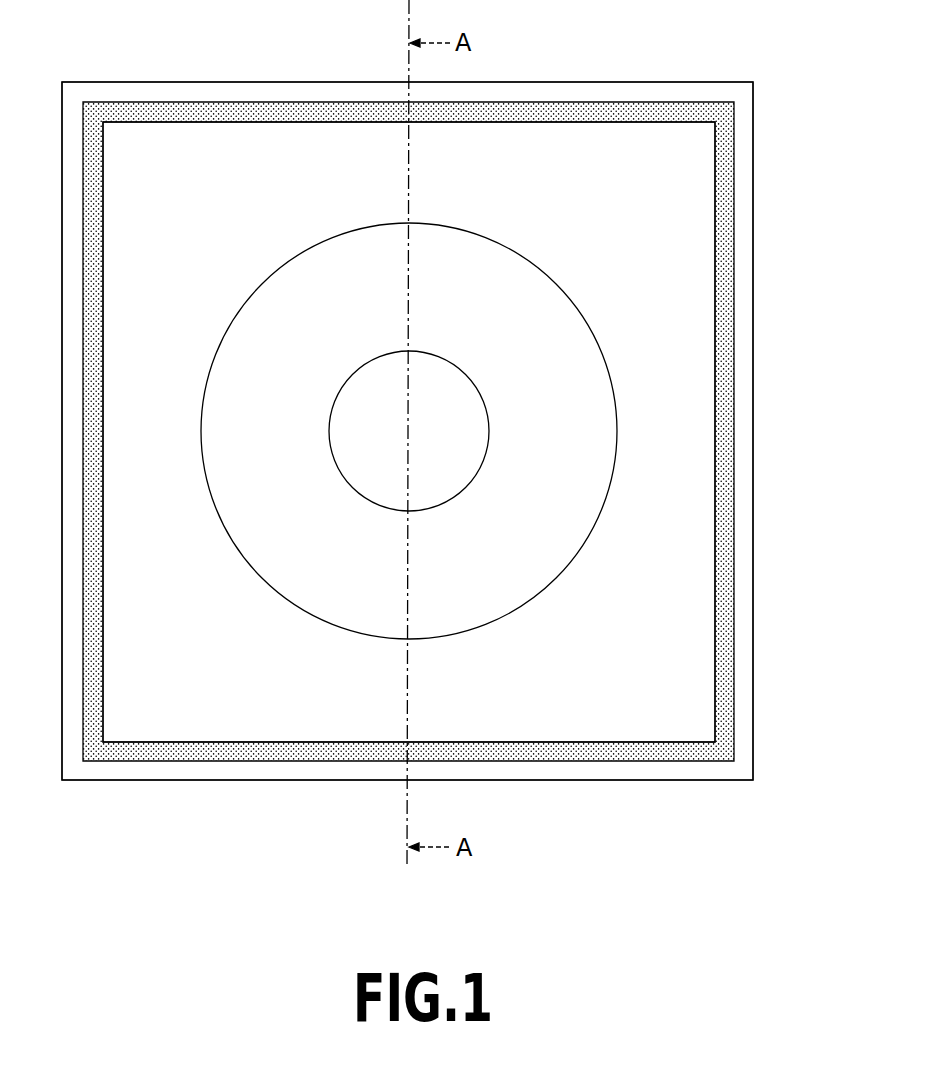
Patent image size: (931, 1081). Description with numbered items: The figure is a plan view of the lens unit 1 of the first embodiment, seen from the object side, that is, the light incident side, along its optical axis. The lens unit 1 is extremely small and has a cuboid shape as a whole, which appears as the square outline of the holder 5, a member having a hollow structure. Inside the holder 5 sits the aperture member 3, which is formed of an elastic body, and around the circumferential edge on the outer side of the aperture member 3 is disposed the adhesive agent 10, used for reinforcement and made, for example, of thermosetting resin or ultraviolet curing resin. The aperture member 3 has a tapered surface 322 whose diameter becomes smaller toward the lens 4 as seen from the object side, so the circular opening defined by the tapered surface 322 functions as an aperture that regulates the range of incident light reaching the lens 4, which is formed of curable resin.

The lens unit 1 is at (150, 803).
The aperture member 3 is at (191, 148).
The lens 4 is at (430, 387).
The holder 5 is at (82, 82).
The adhesive agent 10 is at (141, 113).
The tapered surface 322 is at (523, 415).